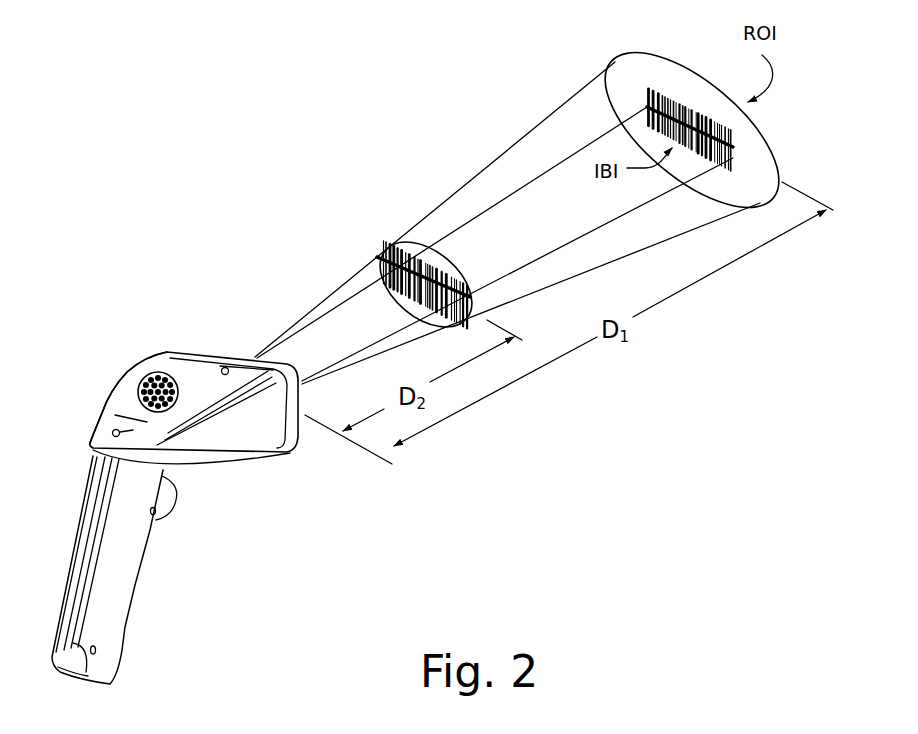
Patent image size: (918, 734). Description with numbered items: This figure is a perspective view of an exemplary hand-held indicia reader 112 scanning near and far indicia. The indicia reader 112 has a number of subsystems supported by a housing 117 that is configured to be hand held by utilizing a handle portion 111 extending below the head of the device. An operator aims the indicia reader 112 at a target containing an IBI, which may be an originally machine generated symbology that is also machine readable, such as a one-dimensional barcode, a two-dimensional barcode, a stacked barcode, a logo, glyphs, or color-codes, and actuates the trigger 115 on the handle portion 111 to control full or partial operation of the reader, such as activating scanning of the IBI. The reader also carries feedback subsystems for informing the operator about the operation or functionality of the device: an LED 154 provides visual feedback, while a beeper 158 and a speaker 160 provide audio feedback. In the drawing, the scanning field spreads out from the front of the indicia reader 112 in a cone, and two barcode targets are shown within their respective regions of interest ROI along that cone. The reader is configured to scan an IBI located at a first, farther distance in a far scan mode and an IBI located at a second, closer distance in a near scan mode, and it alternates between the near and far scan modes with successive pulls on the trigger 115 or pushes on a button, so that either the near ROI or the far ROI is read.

The handle portion 111 is at (108, 640).
The indicia reader 112 is at (224, 438).
The trigger 115 is at (163, 490).
The housing 117 is at (102, 413).
The LED 154 is at (226, 367).
The beeper 158 is at (100, 423).
The speaker 160 is at (160, 373).
The region of interest ROI is at (420, 242).
The information bearing indicia IBI is at (407, 302).